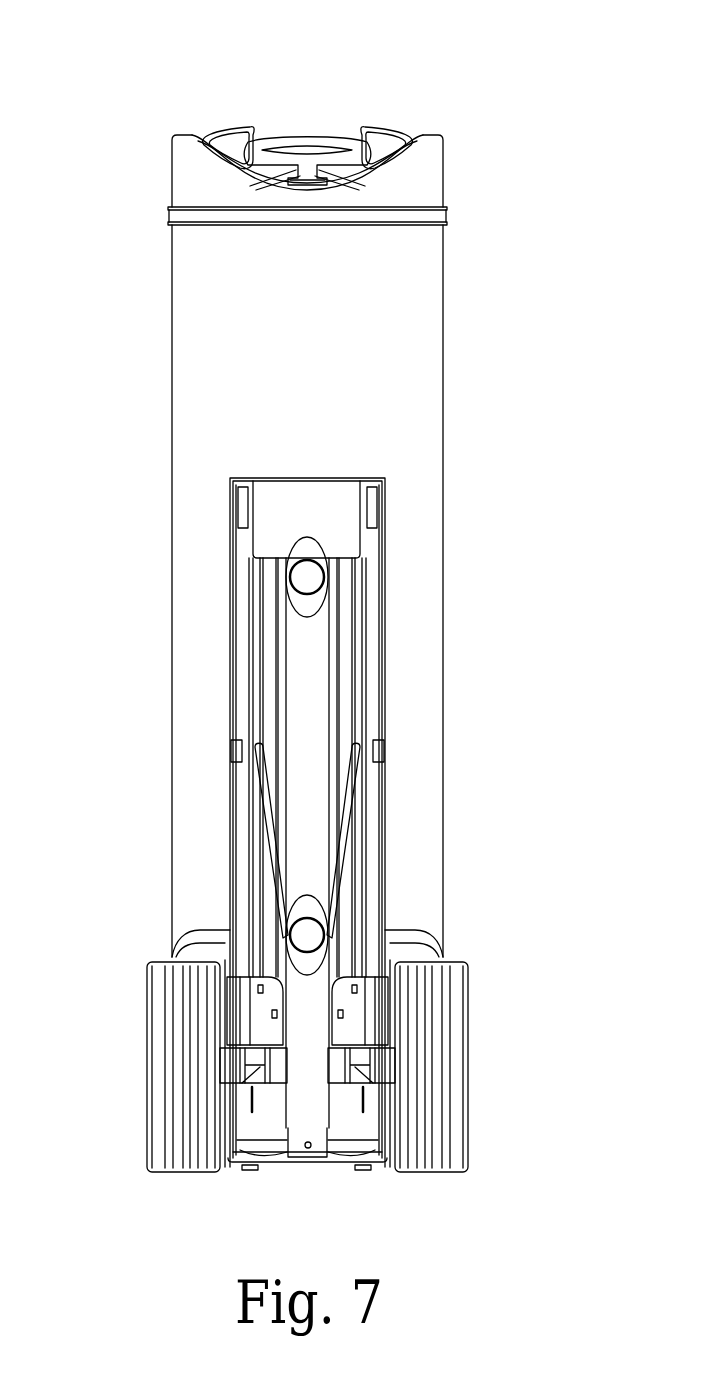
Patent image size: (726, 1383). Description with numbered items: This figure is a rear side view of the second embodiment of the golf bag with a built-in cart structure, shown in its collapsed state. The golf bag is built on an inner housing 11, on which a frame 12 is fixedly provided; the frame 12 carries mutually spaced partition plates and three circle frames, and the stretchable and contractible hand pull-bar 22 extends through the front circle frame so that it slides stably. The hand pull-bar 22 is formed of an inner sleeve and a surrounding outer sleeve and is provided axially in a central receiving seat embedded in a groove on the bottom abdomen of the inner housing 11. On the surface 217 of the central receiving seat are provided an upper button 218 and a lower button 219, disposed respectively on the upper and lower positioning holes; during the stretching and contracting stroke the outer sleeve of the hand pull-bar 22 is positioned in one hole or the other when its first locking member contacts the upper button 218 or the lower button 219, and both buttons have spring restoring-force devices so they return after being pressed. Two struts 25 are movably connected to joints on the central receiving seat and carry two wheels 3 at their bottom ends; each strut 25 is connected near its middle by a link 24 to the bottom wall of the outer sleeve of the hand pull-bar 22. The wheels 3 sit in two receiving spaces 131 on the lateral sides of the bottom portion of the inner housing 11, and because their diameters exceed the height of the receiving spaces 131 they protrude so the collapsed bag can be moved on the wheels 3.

The wheel 3 is at (155, 1062).
The inner housing 11 is at (200, 326).
The frame 12 is at (200, 143).
The stretchable and contractible hand pull-bar 22 is at (327, 125).
The link 24 is at (268, 830).
The strut 25 is at (245, 705).
The receiving space 131 is at (404, 954).
The surface of the central receiving seat 217 is at (345, 508).
The upper button 218 is at (303, 578).
The lower button 219 is at (305, 937).